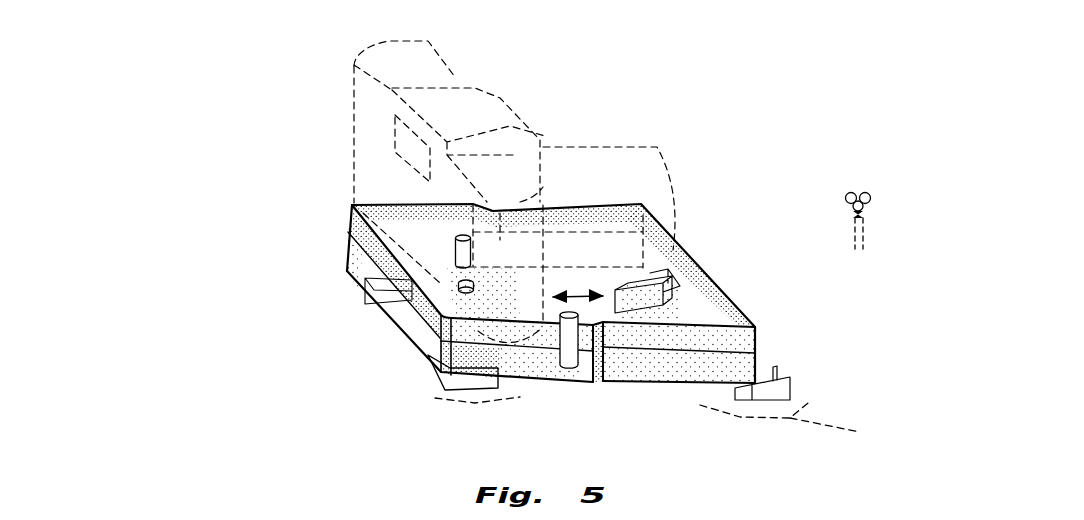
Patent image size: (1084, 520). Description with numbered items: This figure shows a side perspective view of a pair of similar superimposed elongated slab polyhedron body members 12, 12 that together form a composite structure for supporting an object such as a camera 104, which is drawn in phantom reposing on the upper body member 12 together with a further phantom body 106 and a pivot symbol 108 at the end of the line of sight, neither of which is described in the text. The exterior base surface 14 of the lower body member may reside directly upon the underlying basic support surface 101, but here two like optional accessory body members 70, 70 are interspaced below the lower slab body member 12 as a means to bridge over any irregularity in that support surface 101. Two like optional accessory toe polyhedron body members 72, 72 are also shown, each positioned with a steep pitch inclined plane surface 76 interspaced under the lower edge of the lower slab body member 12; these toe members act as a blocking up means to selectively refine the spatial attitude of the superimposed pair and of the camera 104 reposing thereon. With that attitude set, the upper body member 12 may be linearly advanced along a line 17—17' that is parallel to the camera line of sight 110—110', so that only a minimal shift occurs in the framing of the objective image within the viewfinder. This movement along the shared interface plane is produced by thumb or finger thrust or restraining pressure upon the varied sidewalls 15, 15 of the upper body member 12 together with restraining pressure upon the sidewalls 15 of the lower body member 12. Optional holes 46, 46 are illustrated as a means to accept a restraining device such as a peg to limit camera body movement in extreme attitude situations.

The elongated slab polyhedron body member 12 is at (382, 321).
The exterior base surface 14 is at (440, 336).
The sidewall 15 is at (352, 205).
The line 17—17' 17 is at (275, 302).
The line 17— 17' is at (815, 305).
The hole 46 is at (463, 235).
The accessory body member 70 is at (418, 387).
The accessory toe polyhedron body member 72 is at (682, 267).
The steep pitch inclined plane surface 76 is at (767, 368).
The underlying basic support surface 101 is at (676, 422).
The camera 104 is at (343, 97).
The phantom body 106 is at (626, 134).
The pivot symbol 108 is at (856, 170).
The camera line of sight 110—110' 110 is at (262, 205).
The camera line of sight 110— 110' is at (746, 205).